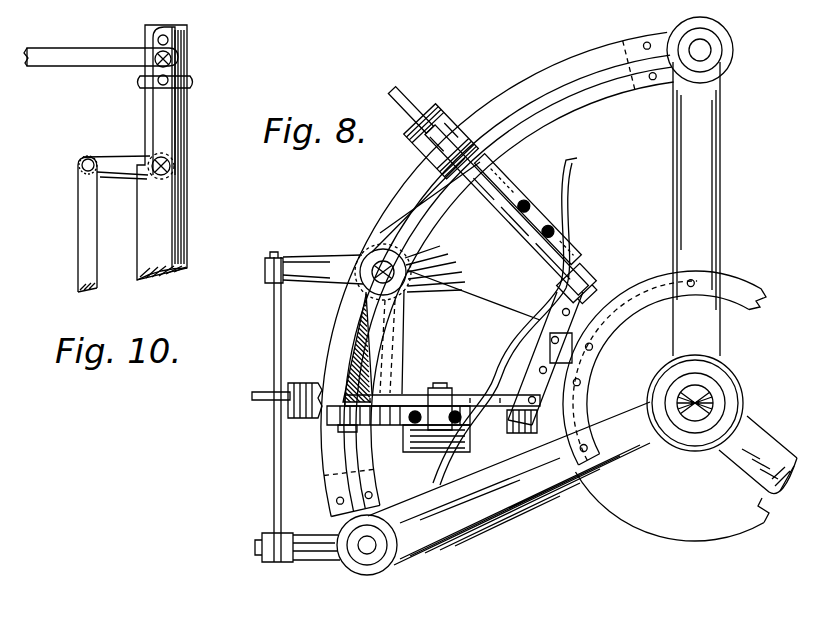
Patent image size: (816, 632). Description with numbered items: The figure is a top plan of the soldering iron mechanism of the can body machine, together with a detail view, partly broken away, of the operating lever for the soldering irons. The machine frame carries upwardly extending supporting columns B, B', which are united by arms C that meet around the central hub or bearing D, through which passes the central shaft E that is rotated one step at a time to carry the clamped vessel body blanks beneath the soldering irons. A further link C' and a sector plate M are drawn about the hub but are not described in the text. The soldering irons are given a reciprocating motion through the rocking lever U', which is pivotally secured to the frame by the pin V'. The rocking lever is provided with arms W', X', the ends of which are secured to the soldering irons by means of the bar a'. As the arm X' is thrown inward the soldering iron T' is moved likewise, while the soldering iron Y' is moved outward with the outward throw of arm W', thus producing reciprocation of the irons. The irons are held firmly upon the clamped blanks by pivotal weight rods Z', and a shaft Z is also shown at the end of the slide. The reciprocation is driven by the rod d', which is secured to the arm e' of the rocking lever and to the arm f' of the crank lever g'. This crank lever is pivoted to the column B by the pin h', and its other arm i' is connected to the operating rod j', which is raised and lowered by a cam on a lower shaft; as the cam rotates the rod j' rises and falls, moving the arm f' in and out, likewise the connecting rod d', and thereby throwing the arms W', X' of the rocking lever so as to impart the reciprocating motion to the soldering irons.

In FIG. 10, the supporting column B is at (162, 152).
In FIG. 8, the supporting column B is at (362, 567).
In FIG. 8, the supporting column B' is at (719, 50).
In FIG. 8, the arm C is at (582, 483).
In FIG. 8, the link C' is at (696, 209).
In FIG. 8, the central hub or bearing D is at (724, 387).
In FIG. 8, the central shaft E is at (694, 415).
In FIG. 8, the sector plate M is at (650, 513).
In FIG. 10, the rod d' is at (101, 76).
In FIG. 8, the rod d' is at (288, 409).
In FIG. 8, the arm e' is at (314, 254).
In FIG. 10, the arm f' is at (175, 101).
In FIG. 10, the crank lever g' is at (185, 169).
In FIG. 10, the pin h' is at (185, 151).
In FIG. 10, the arm i' is at (114, 180).
In FIG. 10, the operating rod j' is at (69, 224).
In FIG. 8, the rocking lever U' is at (380, 254).
In FIG. 8, the pin V' is at (429, 293).
In FIG. 8, the arm W' is at (427, 148).
In FIG. 8, the arm X' is at (432, 406).
In FIG. 8, the soldering iron Y' is at (512, 204).
In FIG. 8, the shaft Z is at (411, 103).
In FIG. 8, the pivotal weight rod Z' is at (278, 407).
In FIG. 8, the bar a' is at (454, 346).
In FIG. 8, the soldering iron T' is at (442, 396).